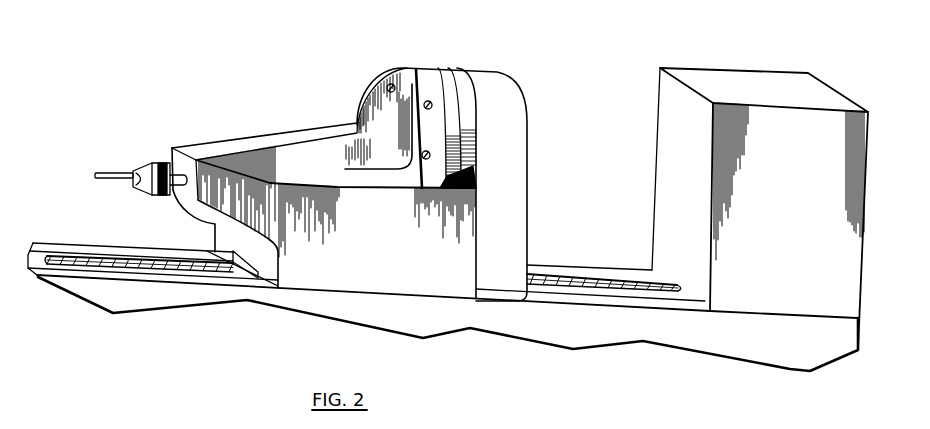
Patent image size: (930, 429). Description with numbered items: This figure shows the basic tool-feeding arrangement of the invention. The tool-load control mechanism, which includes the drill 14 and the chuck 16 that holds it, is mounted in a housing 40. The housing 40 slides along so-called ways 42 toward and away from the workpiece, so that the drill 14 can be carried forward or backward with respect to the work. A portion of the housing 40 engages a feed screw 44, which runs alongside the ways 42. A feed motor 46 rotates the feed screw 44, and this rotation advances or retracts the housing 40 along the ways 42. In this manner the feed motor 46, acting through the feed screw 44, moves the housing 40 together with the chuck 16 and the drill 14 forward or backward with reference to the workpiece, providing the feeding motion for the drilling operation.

The drill 14 is at (112, 174).
The chuck 16 is at (165, 163).
The housing 40 is at (349, 184).
The ways 42 is at (65, 247).
The feed screw 44 is at (122, 260).
The feed motor 46 is at (760, 209).